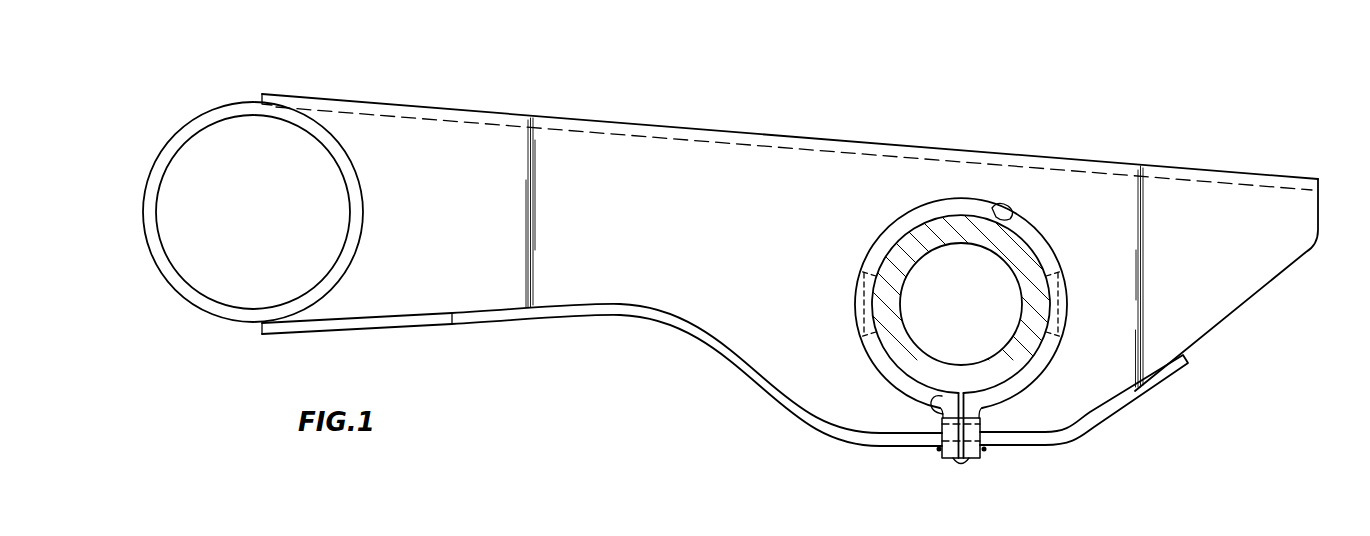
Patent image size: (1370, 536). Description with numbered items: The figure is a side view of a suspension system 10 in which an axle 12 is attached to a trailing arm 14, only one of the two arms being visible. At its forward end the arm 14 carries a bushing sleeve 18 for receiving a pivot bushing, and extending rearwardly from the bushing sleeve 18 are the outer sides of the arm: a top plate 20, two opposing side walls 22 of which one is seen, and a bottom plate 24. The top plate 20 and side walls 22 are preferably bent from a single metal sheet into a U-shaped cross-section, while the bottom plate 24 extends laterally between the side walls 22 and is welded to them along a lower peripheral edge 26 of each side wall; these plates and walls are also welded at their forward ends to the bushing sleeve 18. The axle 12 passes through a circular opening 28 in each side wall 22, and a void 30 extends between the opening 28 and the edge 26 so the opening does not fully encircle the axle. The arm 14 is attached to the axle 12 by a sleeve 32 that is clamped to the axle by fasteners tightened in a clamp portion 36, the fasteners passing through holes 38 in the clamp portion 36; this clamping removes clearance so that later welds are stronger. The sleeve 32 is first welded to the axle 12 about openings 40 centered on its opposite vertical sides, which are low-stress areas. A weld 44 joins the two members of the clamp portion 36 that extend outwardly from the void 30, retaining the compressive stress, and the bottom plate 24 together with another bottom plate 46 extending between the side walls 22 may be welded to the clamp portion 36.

The suspension system 10 is at (1018, 80).
The axle 12 is at (960, 215).
The trailing arm 14 is at (402, 103).
The bushing sleeve 18 is at (192, 126).
The top plate 20 is at (1185, 167).
The side wall 22 is at (663, 267).
The bottom plate 24 is at (547, 320).
The lower peripheral edge 26 is at (765, 385).
The circular opening 28 is at (1010, 216).
The void 30 is at (928, 412).
The sleeve 32 is at (902, 212).
The clamp portion 36 is at (975, 465).
The holes 38 is at (982, 424).
The openings 40 is at (850, 302).
The weld 44 is at (960, 462).
The bottom plate 46 is at (1157, 390).